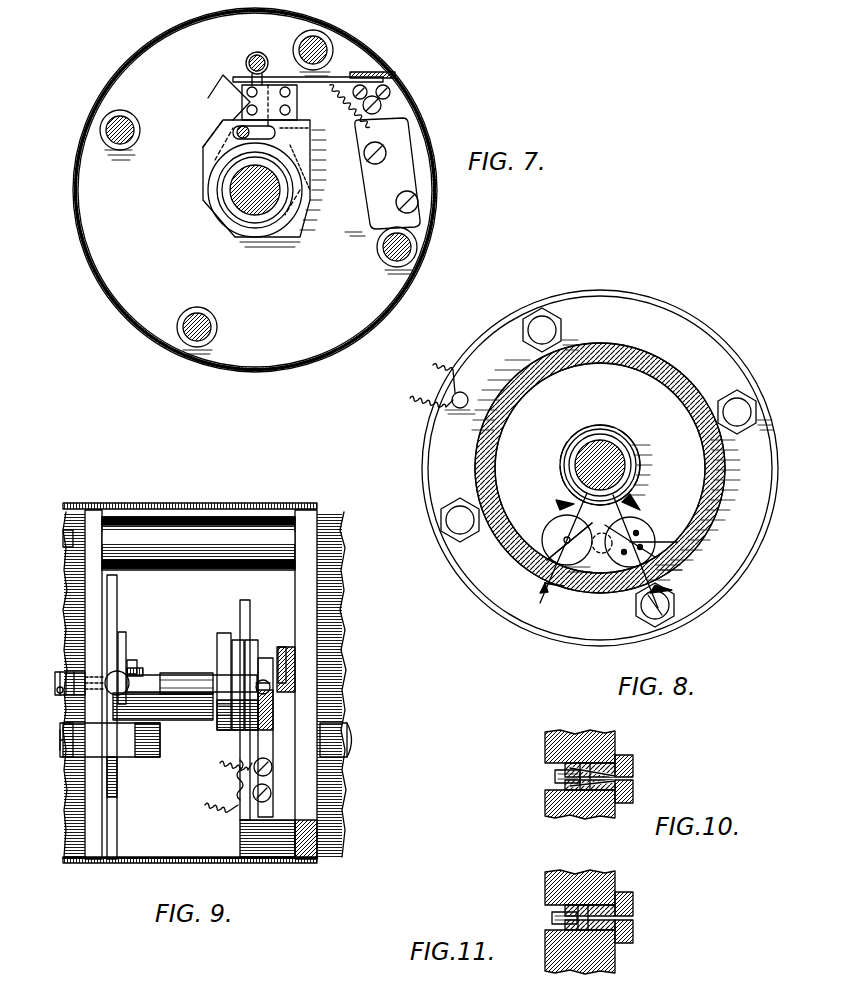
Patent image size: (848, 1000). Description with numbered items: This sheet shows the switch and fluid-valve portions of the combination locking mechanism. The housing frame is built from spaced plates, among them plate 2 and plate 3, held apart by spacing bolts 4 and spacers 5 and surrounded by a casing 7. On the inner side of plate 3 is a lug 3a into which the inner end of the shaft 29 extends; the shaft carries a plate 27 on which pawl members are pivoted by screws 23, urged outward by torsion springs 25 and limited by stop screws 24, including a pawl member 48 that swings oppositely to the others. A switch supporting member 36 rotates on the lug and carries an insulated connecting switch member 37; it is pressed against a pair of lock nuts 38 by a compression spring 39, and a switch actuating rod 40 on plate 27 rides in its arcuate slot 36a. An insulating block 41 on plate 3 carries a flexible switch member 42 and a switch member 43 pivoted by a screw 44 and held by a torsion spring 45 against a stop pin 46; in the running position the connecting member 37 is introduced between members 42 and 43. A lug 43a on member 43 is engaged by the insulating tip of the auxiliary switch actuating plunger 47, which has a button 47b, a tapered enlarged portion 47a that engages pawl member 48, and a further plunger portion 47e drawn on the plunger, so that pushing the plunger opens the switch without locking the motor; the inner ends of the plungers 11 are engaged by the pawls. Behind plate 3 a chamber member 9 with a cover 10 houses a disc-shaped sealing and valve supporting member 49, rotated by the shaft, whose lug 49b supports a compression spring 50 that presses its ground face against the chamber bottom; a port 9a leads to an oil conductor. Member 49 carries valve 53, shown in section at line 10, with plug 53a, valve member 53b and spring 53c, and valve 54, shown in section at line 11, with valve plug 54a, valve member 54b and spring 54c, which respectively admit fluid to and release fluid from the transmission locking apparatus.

In FIG. 9, the plate 2 is at (92, 864).
In FIG. 7, the plate 3 is at (135, 52).
In FIG. 8, the plate 3 is at (612, 303).
In FIG. 9, the plate 3 is at (300, 833).
In FIG. 7, the lug 3a is at (245, 212).
In FIG. 9, the lug 3a is at (292, 660).
In FIG. 7, the spacing bolt 4 is at (100, 126).
In FIG. 8, the spacing bolt 4 is at (540, 307).
In FIG. 9, the spacing bolt 4 is at (63, 538).
In FIG. 7, the spacer 5 is at (105, 142).
In FIG. 9, the spacer 5 is at (195, 535).
In FIG. 7, the casing 7 is at (122, 70).
In FIG. 8, the casing 7 is at (645, 302).
In FIG. 9, the casing 7 is at (232, 510).
In FIG. 8, the chamber member 9 is at (660, 372).
In FIG. 9, the chamber member 9 is at (342, 598).
In FIG. 8, the port 9a is at (600, 553).
In FIG. 8, the cover 10 is at (547, 546).
In FIG. 8, the plunger member 11 is at (654, 551).
In FIG. 9, the screw 23 is at (165, 678).
In FIG. 9, the stop screw 24 is at (135, 658).
In FIG. 9, the torsion spring 25 is at (170, 672).
In FIG. 9, the plate 27 is at (118, 800).
In FIG. 7, the shaft 29 is at (250, 205).
In FIG. 9, the shaft 29 is at (168, 722).
In FIG. 7, the switch supporting member 36 is at (308, 170).
In FIG. 9, the switch supporting member 36 is at (238, 640).
In FIG. 7, the arcuate slot 36a is at (300, 140).
In FIG. 7, the connecting switch member 37 is at (270, 84).
In FIG. 9, the connecting switch member 37 is at (252, 640).
In FIG. 7, the lock nut 38 is at (217, 197).
In FIG. 9, the lock nut 38 is at (224, 633).
In FIG. 9, the compression spring 39 is at (281, 647).
In FIG. 7, the switch actuating rod 40 is at (210, 150).
In FIG. 7, the insulating block 41 is at (422, 125).
In FIG. 9, the insulating block 41 is at (318, 848).
In FIG. 7, the flexible switch member 42 is at (330, 80).
In FIG. 9, the flexible switch member 42 is at (240, 825).
In FIG. 7, the switch member 43 is at (233, 79).
In FIG. 9, the switch member 43 is at (273, 695).
In FIG. 7, the lug 43a is at (258, 55).
In FIG. 9, the lug 43a is at (270, 686).
In FIG. 7, the screw 44 is at (385, 80).
In FIG. 9, the screw 44 is at (272, 793).
In FIG. 7, the torsion spring 45 is at (392, 92).
In FIG. 9, the torsion spring 45 is at (272, 770).
In FIG. 7, the stop pin 46 is at (375, 78).
In FIG. 9, the stop pin 46 is at (250, 778).
In FIG. 9, the auxiliary switch actuating plunger 47 is at (58, 682).
In FIG. 7, the enlarged portion 47a is at (246, 62).
In FIG. 9, the enlarged portion 47a is at (185, 725).
In FIG. 9, the button 47b is at (62, 698).
In FIG. 9, the threaded portion 47e is at (138, 667).
In FIG. 9, the pawl member 48 is at (124, 632).
In FIG. 8, the sealing and valve supporting member 49 is at (618, 465).
In FIG. 10, the sealing and valve supporting member 49 is at (572, 818).
In FIG. 11, the sealing and valve supporting member 49 is at (595, 973).
In FIG. 8, the lug 49b is at (612, 436).
In FIG. 8, the compression spring 50 is at (596, 440).
In FIG. 8, the valve 53 is at (547, 529).
In FIG. 10, the valve 53 is at (610, 764).
In FIG. 8, the plug 53a is at (548, 560).
In FIG. 10, the plug 53a is at (634, 777).
In FIG. 10, the valve member 53b is at (555, 777).
In FIG. 10, the compression spring 53c is at (580, 766).
In FIG. 8, the valve 54 is at (645, 538).
In FIG. 11, the valve 54 is at (634, 935).
In FIG. 8, the valve plug 54a is at (680, 545).
In FIG. 11, the valve plug 54a is at (634, 905).
In FIG. 11, the valve member 54b is at (552, 918).
In FIG. 11, the compression spring 54c is at (590, 908).